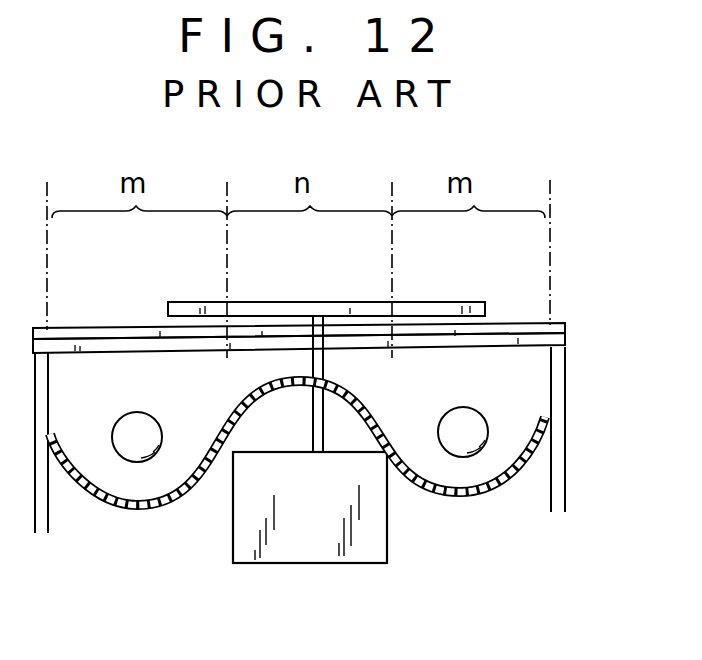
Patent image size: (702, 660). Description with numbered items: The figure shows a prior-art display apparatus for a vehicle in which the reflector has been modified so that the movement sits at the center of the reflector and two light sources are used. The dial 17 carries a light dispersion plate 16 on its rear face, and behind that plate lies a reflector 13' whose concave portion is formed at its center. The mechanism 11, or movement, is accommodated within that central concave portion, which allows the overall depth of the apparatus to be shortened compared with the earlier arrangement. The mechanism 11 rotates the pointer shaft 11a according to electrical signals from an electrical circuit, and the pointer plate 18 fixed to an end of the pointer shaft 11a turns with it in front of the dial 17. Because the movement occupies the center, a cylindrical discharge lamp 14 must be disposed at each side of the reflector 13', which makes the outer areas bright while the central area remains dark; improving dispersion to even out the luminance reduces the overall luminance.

The mechanism 11 is at (320, 560).
The pointer shaft 11a is at (325, 367).
The reflector 13' is at (297, 481).
The cylindrical discharge lamp 14 is at (125, 453).
The light dispersion plate 16 is at (565, 341).
The dial 17 is at (565, 325).
The pointer plate 18 is at (331, 302).